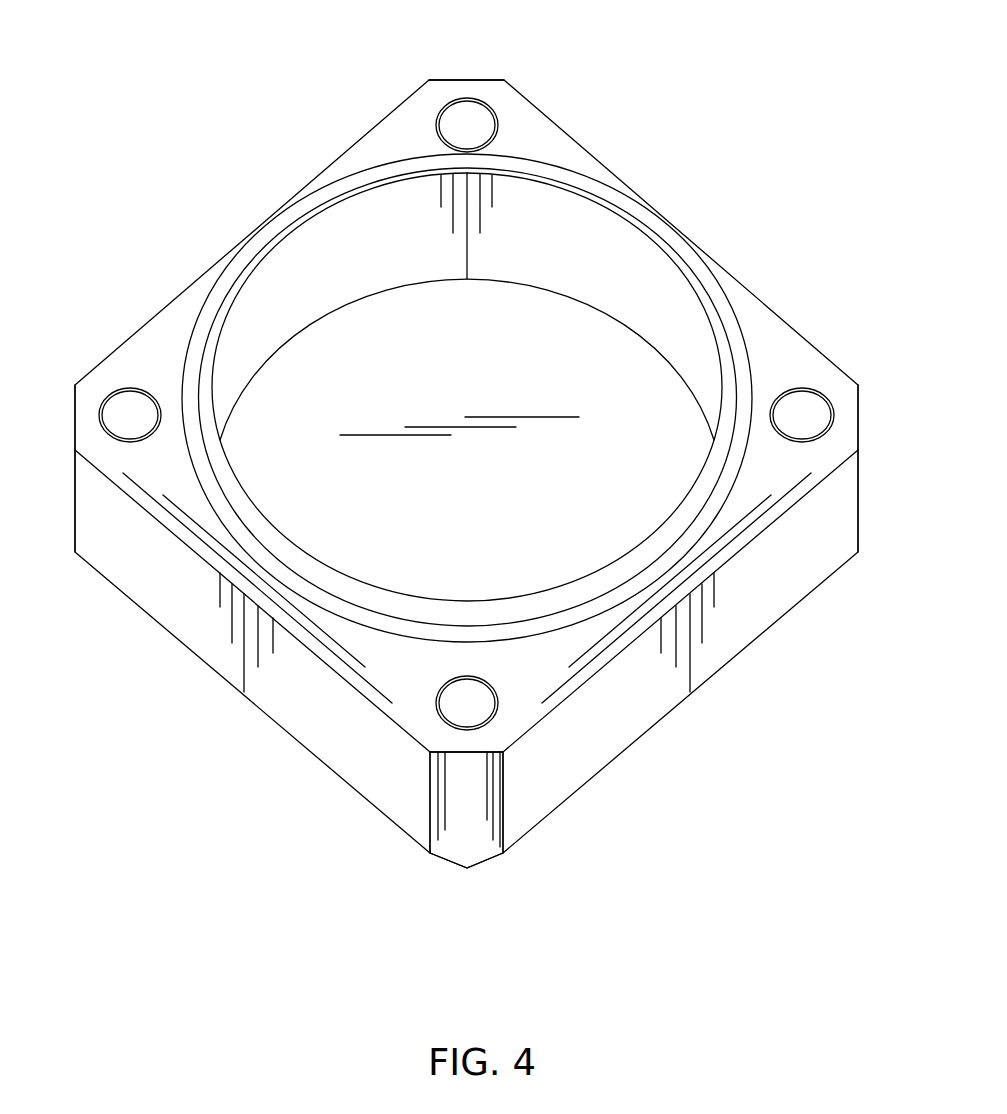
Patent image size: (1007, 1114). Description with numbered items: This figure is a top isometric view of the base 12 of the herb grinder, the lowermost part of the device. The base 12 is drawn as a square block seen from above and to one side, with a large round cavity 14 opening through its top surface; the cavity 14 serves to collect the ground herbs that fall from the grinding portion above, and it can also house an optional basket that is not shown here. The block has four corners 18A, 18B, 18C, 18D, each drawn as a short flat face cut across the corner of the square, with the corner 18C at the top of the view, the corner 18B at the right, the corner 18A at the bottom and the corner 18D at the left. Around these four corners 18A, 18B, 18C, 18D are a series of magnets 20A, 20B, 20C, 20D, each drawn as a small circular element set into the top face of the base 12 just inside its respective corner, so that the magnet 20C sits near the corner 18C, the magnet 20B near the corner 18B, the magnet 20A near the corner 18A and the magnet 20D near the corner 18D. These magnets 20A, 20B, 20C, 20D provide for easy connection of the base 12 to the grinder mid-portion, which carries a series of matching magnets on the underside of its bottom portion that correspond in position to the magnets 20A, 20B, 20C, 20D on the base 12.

The base 12 is at (803, 222).
The cavity 14 is at (672, 223).
The corner 18A is at (443, 858).
The corner 18B is at (858, 553).
The corner 18C is at (463, 78).
The corner 18D is at (75, 553).
The magnet 20A is at (478, 712).
The magnet 20B is at (808, 400).
The magnet 20C is at (480, 118).
The magnet 20D is at (126, 410).